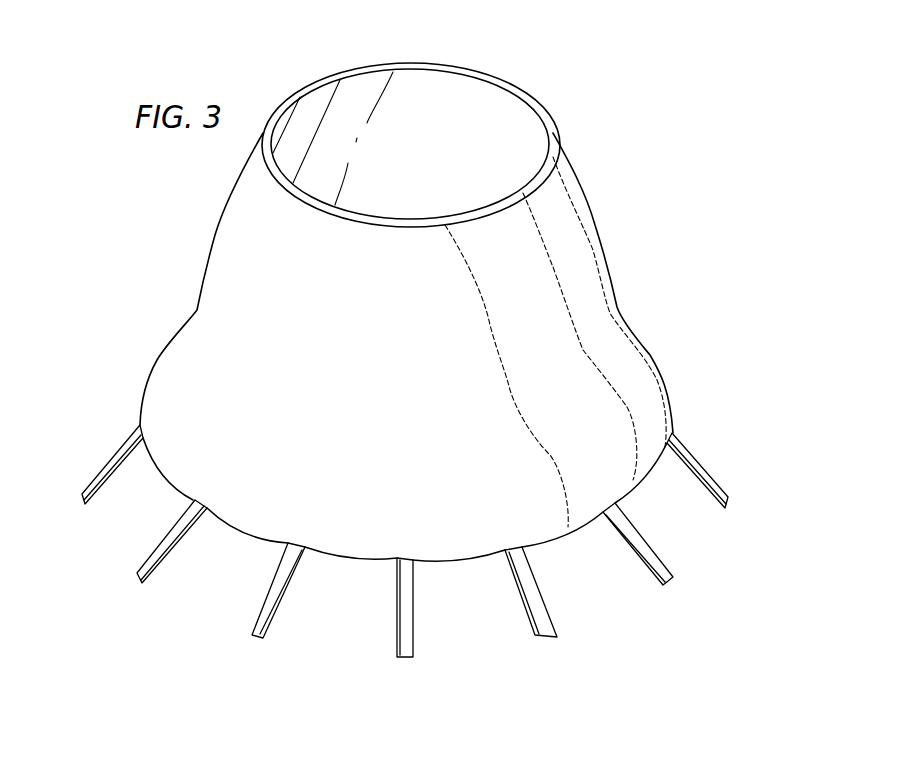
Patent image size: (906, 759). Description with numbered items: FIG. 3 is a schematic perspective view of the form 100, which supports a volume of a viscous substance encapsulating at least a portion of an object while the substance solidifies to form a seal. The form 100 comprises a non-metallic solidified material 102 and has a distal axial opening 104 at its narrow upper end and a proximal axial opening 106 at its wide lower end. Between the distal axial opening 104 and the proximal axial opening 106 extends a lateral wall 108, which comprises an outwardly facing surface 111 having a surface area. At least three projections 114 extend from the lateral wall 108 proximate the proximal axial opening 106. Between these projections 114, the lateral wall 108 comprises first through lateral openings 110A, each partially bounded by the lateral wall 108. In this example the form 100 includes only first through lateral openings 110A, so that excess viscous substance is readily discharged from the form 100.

The form 100 is at (608, 105).
The non-metallic solidified material 102 is at (592, 210).
The distal axial opening 104 is at (430, 87).
The proximal axial opening 106 is at (367, 686).
The lateral wall 108 is at (180, 274).
The first through lateral opening 110A is at (340, 625).
The outwardly facing surface 111 is at (418, 346).
The projections 114 is at (92, 482).